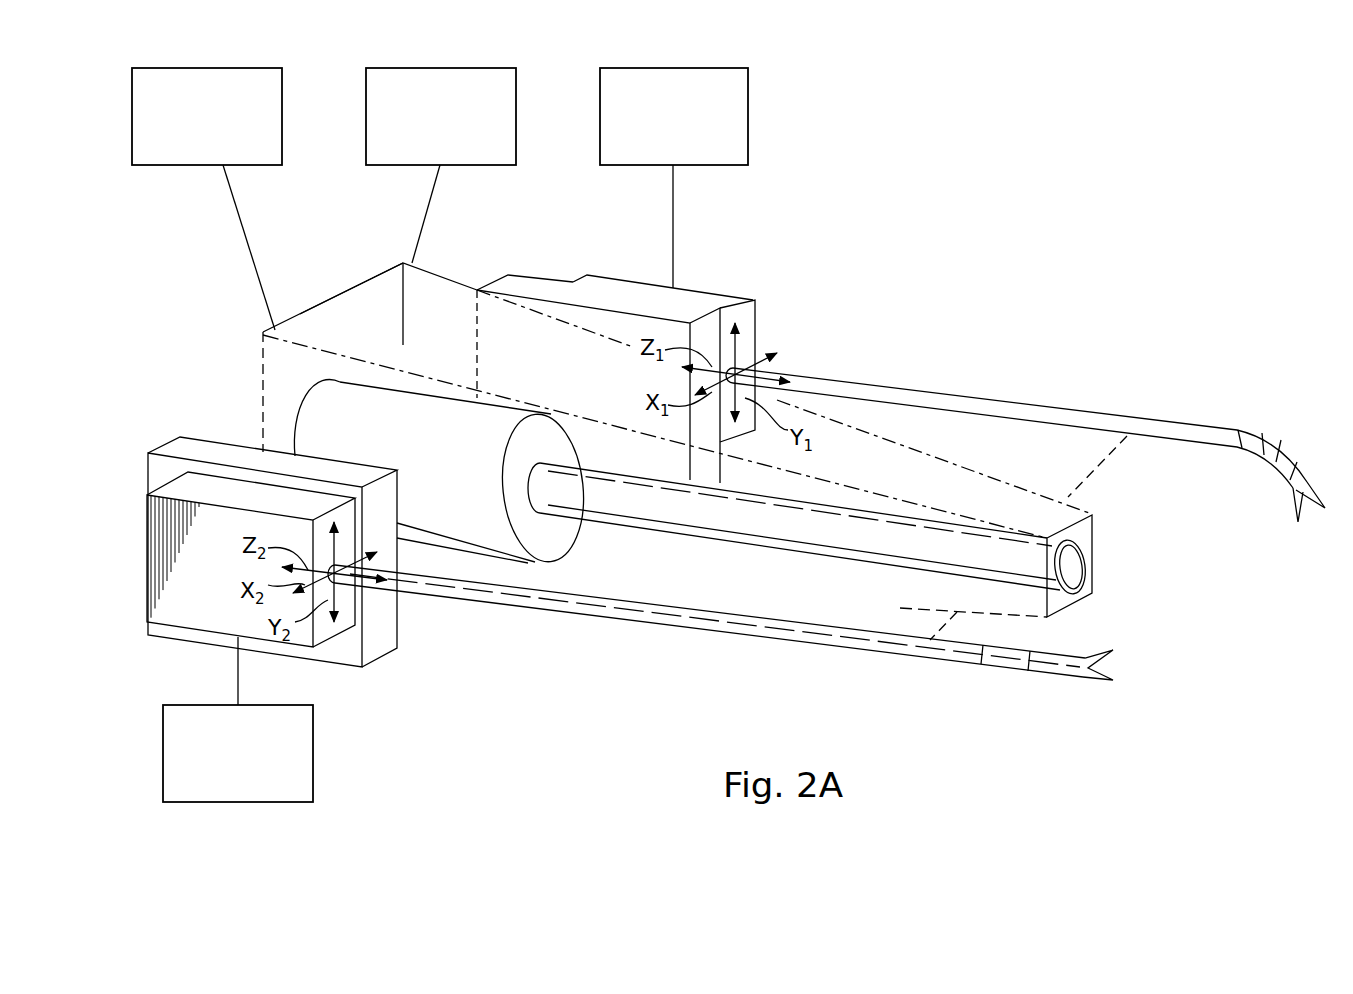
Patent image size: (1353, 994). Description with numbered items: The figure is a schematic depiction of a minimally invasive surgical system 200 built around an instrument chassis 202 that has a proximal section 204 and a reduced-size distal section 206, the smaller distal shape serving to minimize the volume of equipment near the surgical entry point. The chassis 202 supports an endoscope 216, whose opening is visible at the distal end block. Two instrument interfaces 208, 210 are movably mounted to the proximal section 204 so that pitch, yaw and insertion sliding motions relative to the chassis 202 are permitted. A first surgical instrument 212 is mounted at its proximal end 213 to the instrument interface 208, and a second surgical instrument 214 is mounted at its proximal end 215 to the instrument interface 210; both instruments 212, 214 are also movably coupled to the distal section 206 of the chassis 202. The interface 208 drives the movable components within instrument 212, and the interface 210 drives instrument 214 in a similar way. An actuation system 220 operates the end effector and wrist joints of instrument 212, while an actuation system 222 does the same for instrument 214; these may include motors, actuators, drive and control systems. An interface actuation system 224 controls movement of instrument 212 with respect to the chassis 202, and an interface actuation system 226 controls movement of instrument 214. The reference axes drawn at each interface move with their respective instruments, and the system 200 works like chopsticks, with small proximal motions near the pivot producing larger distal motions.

The minimally invasive surgical system 200 is at (979, 170).
The instrument chassis 202 is at (390, 270).
The proximal section 204 is at (330, 291).
The distal section 206 is at (1090, 511).
The instrument interface 208 is at (527, 283).
The instrument interface 210 is at (200, 447).
The surgical instrument 212 is at (618, 280).
The proximal end 213 is at (718, 285).
The surgical instrument 214 is at (213, 608).
The proximal end 215 is at (145, 575).
The endoscope 216 is at (1072, 563).
The actuation system 220 is at (657, 67).
The actuation system 222 is at (222, 803).
The interface actuation system 224 is at (423, 67).
The interface actuation system 226 is at (190, 67).